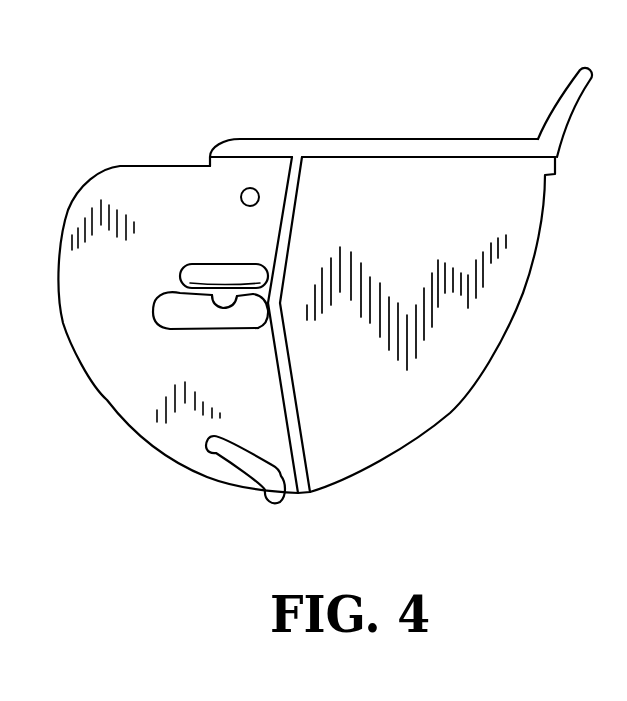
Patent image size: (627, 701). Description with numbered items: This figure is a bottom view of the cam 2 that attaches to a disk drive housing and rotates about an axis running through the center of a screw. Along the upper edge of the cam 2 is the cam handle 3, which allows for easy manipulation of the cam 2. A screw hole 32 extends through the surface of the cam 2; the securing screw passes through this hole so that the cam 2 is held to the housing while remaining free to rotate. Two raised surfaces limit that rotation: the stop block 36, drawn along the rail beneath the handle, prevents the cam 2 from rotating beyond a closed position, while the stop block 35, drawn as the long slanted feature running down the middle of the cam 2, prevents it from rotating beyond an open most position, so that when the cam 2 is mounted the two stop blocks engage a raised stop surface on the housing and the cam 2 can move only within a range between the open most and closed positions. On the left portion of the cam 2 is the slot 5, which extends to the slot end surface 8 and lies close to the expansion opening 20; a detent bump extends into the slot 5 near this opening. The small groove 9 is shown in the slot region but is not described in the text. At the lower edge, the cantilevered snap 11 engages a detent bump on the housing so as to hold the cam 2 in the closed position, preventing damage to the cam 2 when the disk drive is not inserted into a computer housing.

The cam 2 is at (494, 420).
The cam handle 3 is at (588, 70).
The slot 5 is at (175, 306).
The slot end surface 8 is at (263, 315).
The groove 9 is at (221, 307).
The cantilevered snap 11 is at (235, 475).
The expansion opening 20 is at (190, 264).
The screw hole 32 is at (249, 188).
The stop block 35 is at (305, 443).
The stop block 36 is at (410, 157).